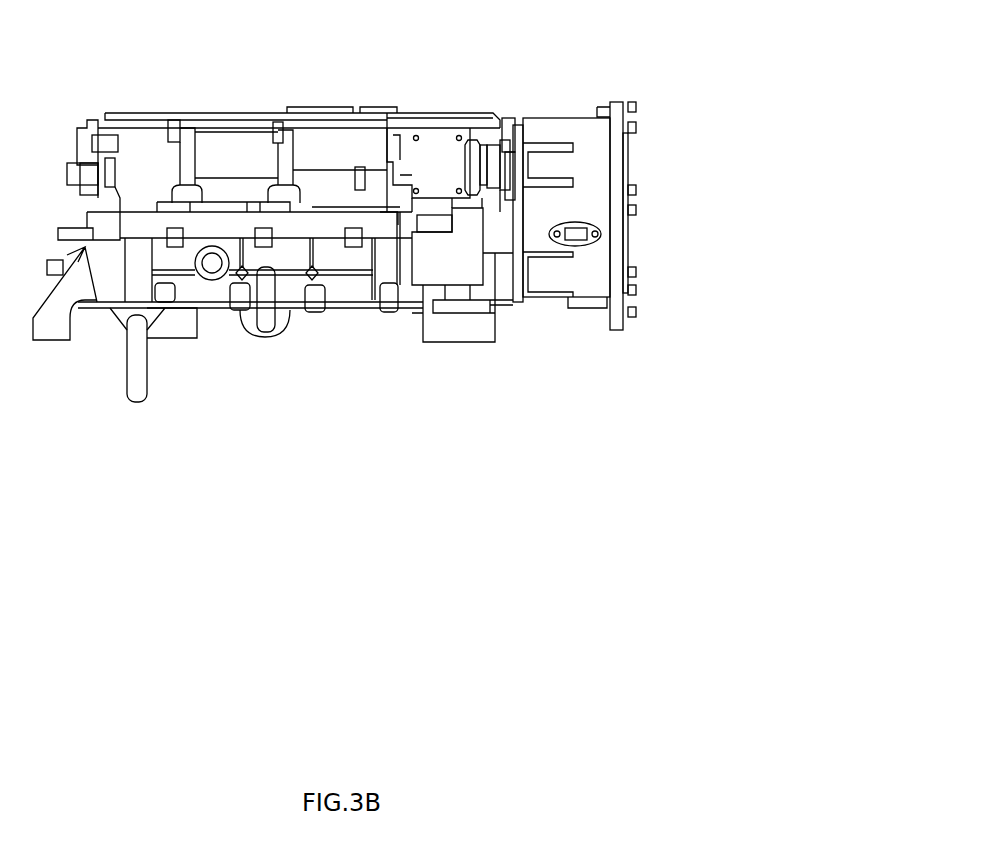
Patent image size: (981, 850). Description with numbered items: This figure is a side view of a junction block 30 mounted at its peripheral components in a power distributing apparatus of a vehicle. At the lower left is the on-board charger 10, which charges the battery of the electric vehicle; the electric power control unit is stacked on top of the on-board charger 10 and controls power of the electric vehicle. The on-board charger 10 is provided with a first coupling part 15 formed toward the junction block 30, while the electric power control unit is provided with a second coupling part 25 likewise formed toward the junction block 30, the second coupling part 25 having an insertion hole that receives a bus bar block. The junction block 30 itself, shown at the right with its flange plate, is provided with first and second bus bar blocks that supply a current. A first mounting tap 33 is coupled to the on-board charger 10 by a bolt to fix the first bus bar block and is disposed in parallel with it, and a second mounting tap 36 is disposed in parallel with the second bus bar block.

The on-board charger 10 is at (341, 343).
The first coupling part 15 is at (506, 318).
The second coupling part 25 is at (485, 106).
The junction block 30 is at (609, 169).
The first mounting tap 33 is at (527, 277).
The second mounting tap 36 is at (527, 165).